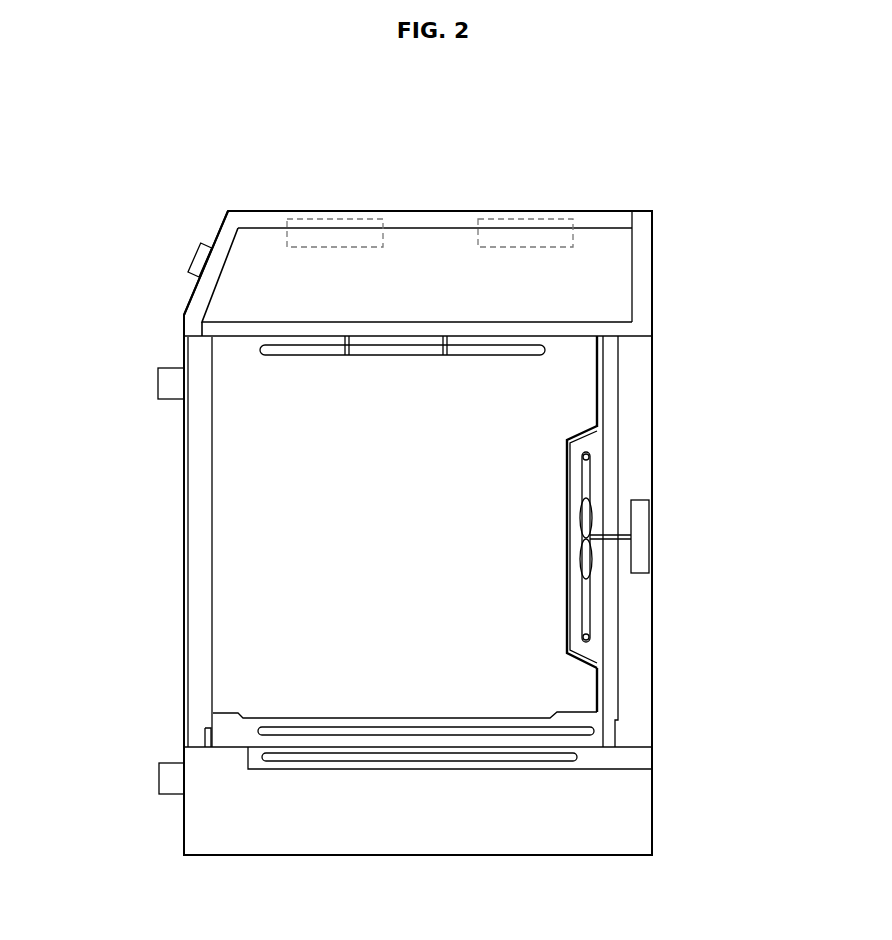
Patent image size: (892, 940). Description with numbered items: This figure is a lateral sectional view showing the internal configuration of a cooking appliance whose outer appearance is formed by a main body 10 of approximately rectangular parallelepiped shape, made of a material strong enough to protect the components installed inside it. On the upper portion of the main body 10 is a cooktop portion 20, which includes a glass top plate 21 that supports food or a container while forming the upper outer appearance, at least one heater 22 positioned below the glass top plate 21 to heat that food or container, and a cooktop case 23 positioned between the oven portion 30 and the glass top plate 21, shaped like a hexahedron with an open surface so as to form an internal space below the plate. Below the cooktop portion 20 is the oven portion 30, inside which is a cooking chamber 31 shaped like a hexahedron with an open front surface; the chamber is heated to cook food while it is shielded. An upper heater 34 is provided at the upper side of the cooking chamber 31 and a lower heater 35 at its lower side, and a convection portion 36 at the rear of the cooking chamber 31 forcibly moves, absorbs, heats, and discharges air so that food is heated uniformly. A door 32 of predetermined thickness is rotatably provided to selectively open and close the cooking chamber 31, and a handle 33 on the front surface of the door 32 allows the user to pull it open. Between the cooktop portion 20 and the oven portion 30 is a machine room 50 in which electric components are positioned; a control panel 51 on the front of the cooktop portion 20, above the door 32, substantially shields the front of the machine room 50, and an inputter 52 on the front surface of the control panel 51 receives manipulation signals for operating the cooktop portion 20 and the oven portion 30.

The main body 10 is at (660, 338).
The cooktop portion 20 is at (473, 215).
The glass top plate 21 is at (432, 220).
The heater 22 is at (533, 222).
The cooktop case 23 is at (641, 235).
The oven portion 30 is at (403, 565).
The cooking chamber 31 is at (405, 562).
The door 32 is at (185, 666).
The handle 33 is at (165, 383).
The upper heater 34 is at (522, 353).
The lower heater 35 is at (585, 733).
The convection portion 36 is at (566, 475).
The machine room 50 is at (447, 298).
The control panel 51 is at (216, 229).
The inputter 52 is at (192, 262).